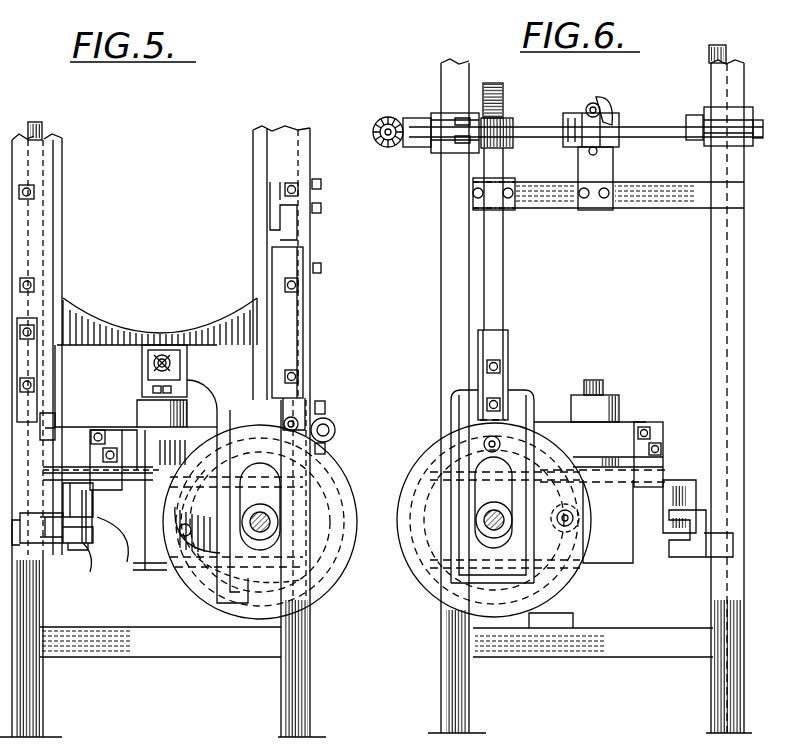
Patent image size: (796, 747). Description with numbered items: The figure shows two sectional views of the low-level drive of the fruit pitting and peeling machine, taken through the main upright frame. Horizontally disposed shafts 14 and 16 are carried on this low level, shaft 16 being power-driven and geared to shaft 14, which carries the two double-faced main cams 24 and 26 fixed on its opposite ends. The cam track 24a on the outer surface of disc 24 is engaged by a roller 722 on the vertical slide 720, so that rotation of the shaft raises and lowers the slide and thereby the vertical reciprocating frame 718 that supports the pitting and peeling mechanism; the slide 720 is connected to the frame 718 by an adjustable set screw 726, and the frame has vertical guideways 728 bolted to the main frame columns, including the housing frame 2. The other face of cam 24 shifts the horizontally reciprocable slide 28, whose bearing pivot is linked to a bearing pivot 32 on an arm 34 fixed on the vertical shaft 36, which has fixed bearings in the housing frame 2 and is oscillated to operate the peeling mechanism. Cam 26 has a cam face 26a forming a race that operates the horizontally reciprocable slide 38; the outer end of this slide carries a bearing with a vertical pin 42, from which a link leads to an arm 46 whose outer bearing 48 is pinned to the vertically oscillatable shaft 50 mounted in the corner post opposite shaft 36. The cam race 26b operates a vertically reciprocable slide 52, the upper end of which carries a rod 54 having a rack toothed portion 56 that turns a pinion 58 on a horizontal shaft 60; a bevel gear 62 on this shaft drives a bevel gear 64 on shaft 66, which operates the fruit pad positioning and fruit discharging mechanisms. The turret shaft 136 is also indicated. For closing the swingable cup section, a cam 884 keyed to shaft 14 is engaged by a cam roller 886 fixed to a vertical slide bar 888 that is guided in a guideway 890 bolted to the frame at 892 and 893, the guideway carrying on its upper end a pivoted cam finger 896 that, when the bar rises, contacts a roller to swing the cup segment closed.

In FIG. 5, the housing frame 2 is at (30, 685).
In FIG. 5, the horizontal shaft 14 is at (266, 521).
In FIG. 6, the horizontal shaft 14 is at (494, 522).
In FIG. 5, the horizontal shaft 16 is at (333, 432).
In FIG. 5, the main cam 24 is at (202, 585).
In FIG. 5, the cam track 24a is at (278, 577).
In FIG. 6, the main cam 26 is at (556, 586).
In FIG. 6, the cam face 26a is at (578, 527).
In FIG. 6, the cam race 26b is at (500, 445).
In FIG. 5, the horizontally reciprocable slide 28 is at (138, 547).
In FIG. 5, the bearing pivot 32 is at (80, 547).
In FIG. 5, the arm 34 is at (55, 565).
In FIG. 5, the vertical shaft 36 is at (44, 130).
In FIG. 6, the horizontally reciprocable slide 38 is at (665, 512).
In FIG. 6, the vertical pin 42 is at (673, 493).
In FIG. 6, the arm 46 is at (702, 520).
In FIG. 6, the outer bearing 48 is at (706, 568).
In FIG. 6, the vertically oscillatable shaft 50 is at (709, 58).
In FIG. 6, the bracket 52 is at (516, 404).
In FIG. 6, the rod 54 is at (496, 287).
In FIG. 6, the rack toothed portion 56 is at (492, 90).
In FIG. 6, the pinion 58 is at (511, 144).
In FIG. 6, the horizontal shaft 60 is at (658, 130).
In FIG. 6, the bevel gear 62 is at (398, 118).
In FIG. 6, the bevel gear 64 is at (388, 150).
In FIG. 6, the shaft 66 is at (378, 140).
In FIG. 6, the vertical shaft 136 is at (606, 386).
In FIG. 5, the vertical reciprocating frame 718 is at (161, 326).
In FIG. 5, the vertical slide 720 is at (232, 596).
In FIG. 5, the roller 722 is at (258, 455).
In FIG. 5, the adjustable set screw 726 is at (150, 366).
In FIG. 5, the vertical guideways 728 is at (47, 222).
In FIG. 5, the cam 884 is at (336, 490).
In FIG. 5, the cam roller 886 is at (295, 420).
In FIG. 5, the vertical slide bar 888 is at (290, 342).
In FIG. 5, the guideway 890 is at (295, 300).
In FIG. 5, the bolt 892 is at (322, 267).
In FIG. 5, the bolt 893 is at (322, 208).
In FIG. 5, the cam finger 896 is at (272, 213).